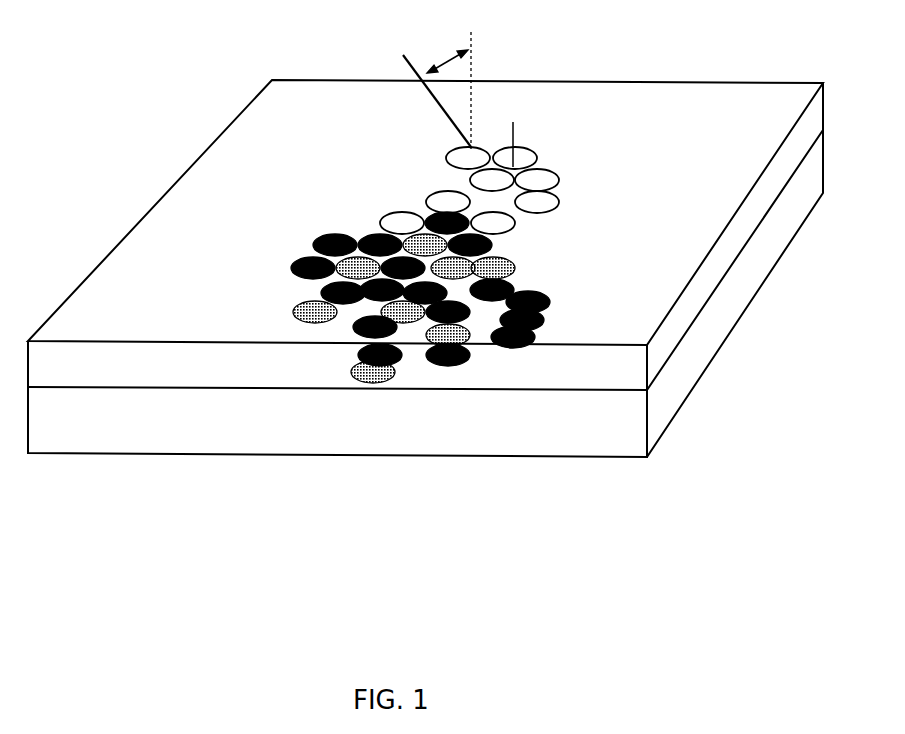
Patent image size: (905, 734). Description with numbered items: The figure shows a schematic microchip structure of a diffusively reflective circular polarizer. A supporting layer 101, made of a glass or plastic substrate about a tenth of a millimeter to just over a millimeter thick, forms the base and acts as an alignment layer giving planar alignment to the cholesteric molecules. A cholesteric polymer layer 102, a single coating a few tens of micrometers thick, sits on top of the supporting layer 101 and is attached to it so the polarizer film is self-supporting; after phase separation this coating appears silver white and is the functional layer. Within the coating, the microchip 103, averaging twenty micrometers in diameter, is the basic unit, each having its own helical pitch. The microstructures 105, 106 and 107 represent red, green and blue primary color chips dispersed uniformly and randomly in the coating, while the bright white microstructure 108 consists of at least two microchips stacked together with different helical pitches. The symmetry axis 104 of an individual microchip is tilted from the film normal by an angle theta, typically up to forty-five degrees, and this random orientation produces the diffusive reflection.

The supporting layer 101 is at (667, 367).
The cholesteric polymer layer 102 is at (688, 303).
The microchip 103 is at (557, 193).
The symmetry axis 104 is at (427, 103).
The red primary color chip 105 is at (317, 235).
The green primary color chip 106 is at (298, 304).
The blue primary color chip 107 is at (297, 257).
The bright white microstructure 108 is at (452, 366).